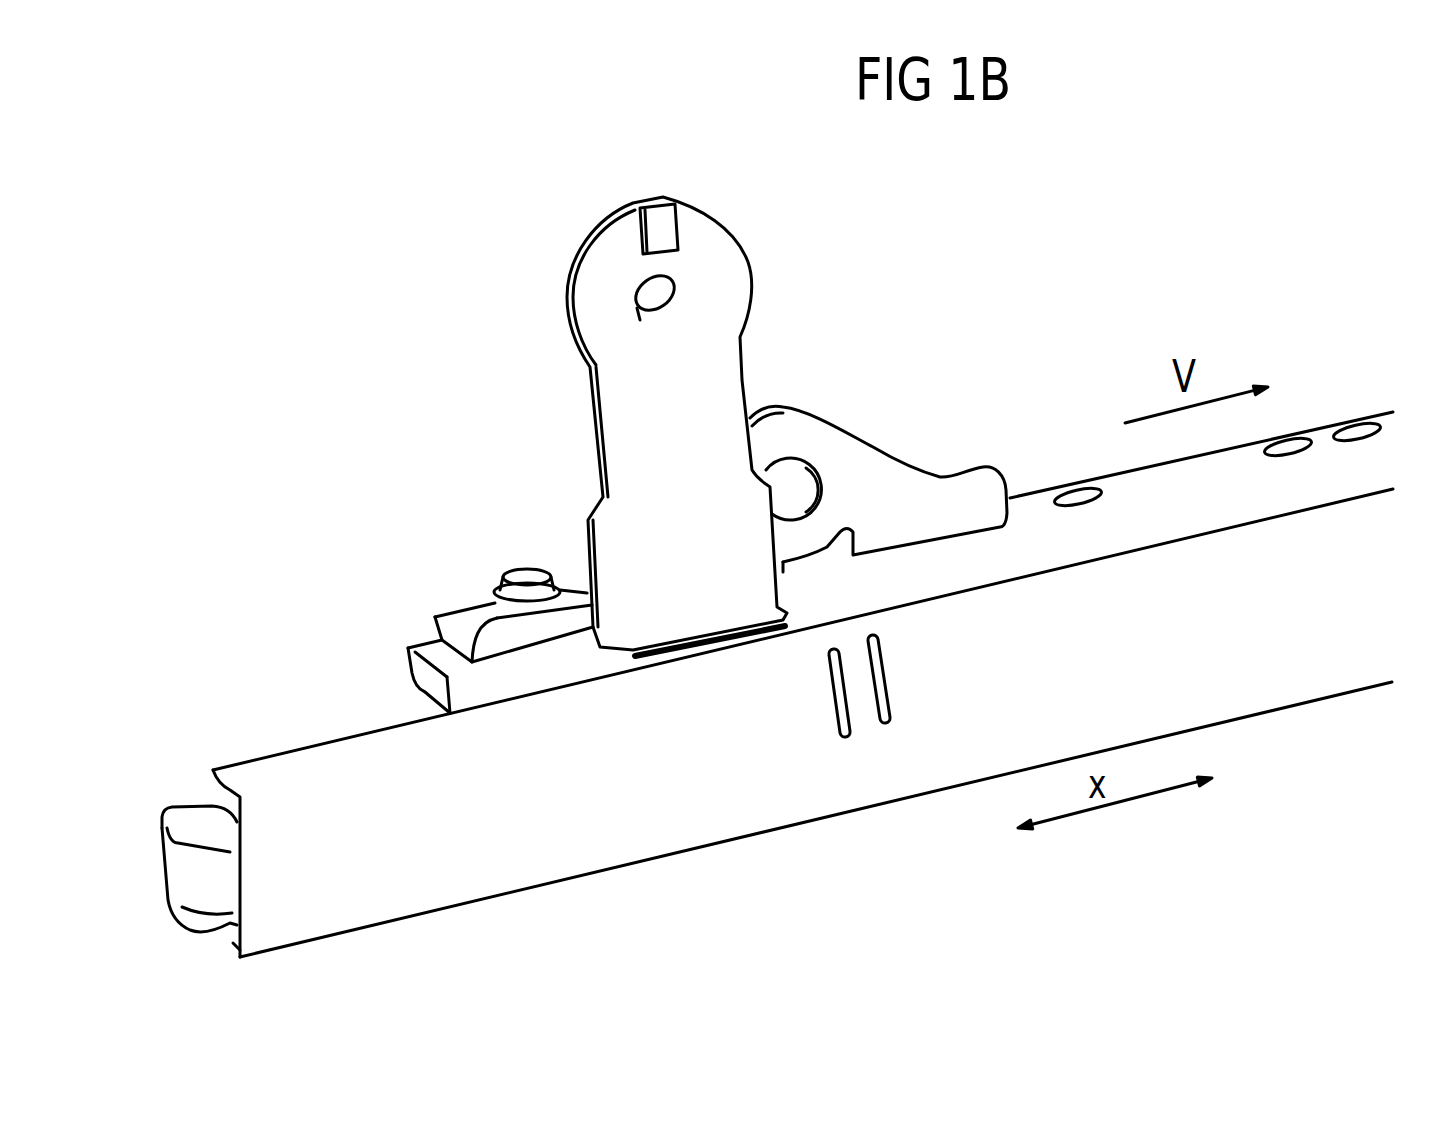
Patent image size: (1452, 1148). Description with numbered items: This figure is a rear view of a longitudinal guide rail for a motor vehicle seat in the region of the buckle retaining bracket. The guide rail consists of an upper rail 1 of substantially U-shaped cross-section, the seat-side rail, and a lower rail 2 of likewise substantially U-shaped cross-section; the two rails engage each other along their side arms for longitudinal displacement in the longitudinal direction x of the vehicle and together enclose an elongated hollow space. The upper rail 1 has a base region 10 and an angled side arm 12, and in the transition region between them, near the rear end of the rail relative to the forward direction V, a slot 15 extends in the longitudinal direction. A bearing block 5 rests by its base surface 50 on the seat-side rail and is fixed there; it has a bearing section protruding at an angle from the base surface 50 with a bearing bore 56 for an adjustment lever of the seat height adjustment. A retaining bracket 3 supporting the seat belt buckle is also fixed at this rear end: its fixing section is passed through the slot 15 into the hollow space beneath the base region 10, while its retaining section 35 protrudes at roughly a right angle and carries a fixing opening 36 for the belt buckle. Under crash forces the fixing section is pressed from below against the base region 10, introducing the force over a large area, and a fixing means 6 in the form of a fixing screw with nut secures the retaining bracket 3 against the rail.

The upper rail 1 is at (1325, 409).
The lower rail 2 is at (1326, 713).
The retaining bracket 3 is at (667, 560).
The bearing block 5 is at (878, 438).
The fixing means 6 is at (517, 572).
The base region 10 is at (346, 672).
The side arm 12 is at (450, 703).
The slot 15 is at (736, 632).
The retaining section 35 is at (720, 335).
The fixing opening 36 is at (657, 286).
The base surface 50 is at (472, 615).
The bearing bore 56 is at (797, 495).